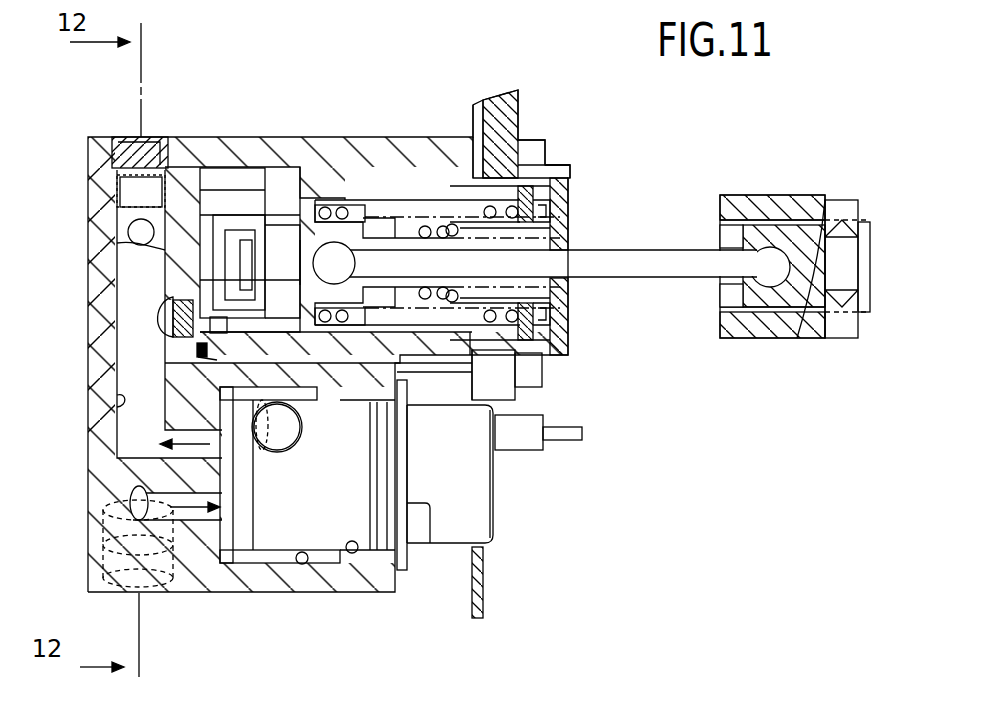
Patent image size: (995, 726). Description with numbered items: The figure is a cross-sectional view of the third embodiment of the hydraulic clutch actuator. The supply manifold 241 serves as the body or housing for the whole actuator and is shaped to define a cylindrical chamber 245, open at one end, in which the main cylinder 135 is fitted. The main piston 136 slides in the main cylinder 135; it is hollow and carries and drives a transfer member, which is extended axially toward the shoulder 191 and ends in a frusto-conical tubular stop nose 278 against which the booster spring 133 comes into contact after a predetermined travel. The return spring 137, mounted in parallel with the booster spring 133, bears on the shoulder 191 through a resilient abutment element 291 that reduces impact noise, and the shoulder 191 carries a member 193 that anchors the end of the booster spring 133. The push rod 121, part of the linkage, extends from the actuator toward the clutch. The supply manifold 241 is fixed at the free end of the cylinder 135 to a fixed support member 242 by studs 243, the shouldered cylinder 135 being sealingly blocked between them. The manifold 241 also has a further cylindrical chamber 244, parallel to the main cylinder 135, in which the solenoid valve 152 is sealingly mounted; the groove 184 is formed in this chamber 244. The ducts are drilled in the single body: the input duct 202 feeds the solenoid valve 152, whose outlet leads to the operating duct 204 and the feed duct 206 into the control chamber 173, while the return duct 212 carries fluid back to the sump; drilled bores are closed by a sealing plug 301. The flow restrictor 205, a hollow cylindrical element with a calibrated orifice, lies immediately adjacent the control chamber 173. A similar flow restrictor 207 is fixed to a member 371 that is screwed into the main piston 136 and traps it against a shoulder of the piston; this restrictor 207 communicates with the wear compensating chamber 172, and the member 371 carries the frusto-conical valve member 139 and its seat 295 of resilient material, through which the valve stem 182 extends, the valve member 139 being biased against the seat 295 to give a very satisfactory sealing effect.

The push rod 121 is at (667, 250).
The booster spring 133 is at (573, 290).
The main cylinder 135 is at (457, 140).
The main piston 136 is at (305, 168).
The return spring 137 is at (518, 150).
The valve member 139 is at (200, 282).
The solenoid valve 152 is at (497, 513).
The wear compensating chamber 172 is at (157, 303).
The control chamber 173 is at (192, 137).
The valve stem 182 is at (165, 262).
The groove 184 is at (303, 564).
The shoulder 191 is at (573, 235).
The anchoring member 193 is at (573, 227).
The input duct 202 is at (152, 590).
The operating duct 204 is at (117, 412).
The flow restrictor 205 is at (160, 313).
The control chamber feed duct 206 is at (117, 400).
The flow restrictor 207 is at (300, 135).
The return duct 212 is at (273, 447).
The supply manifold 241 is at (265, 137).
The fixed support member 242 is at (487, 587).
The studs 243 is at (547, 140).
The further cylindrical chamber 244 is at (358, 547).
The cylindrical chamber 245 is at (377, 195).
The tubular nose 278 is at (407, 173).
The resilient abutment element 291 is at (557, 167).
The valve seat member 295 is at (230, 137).
The sealing plug 301 is at (150, 137).
The piston base member 371 is at (117, 243).